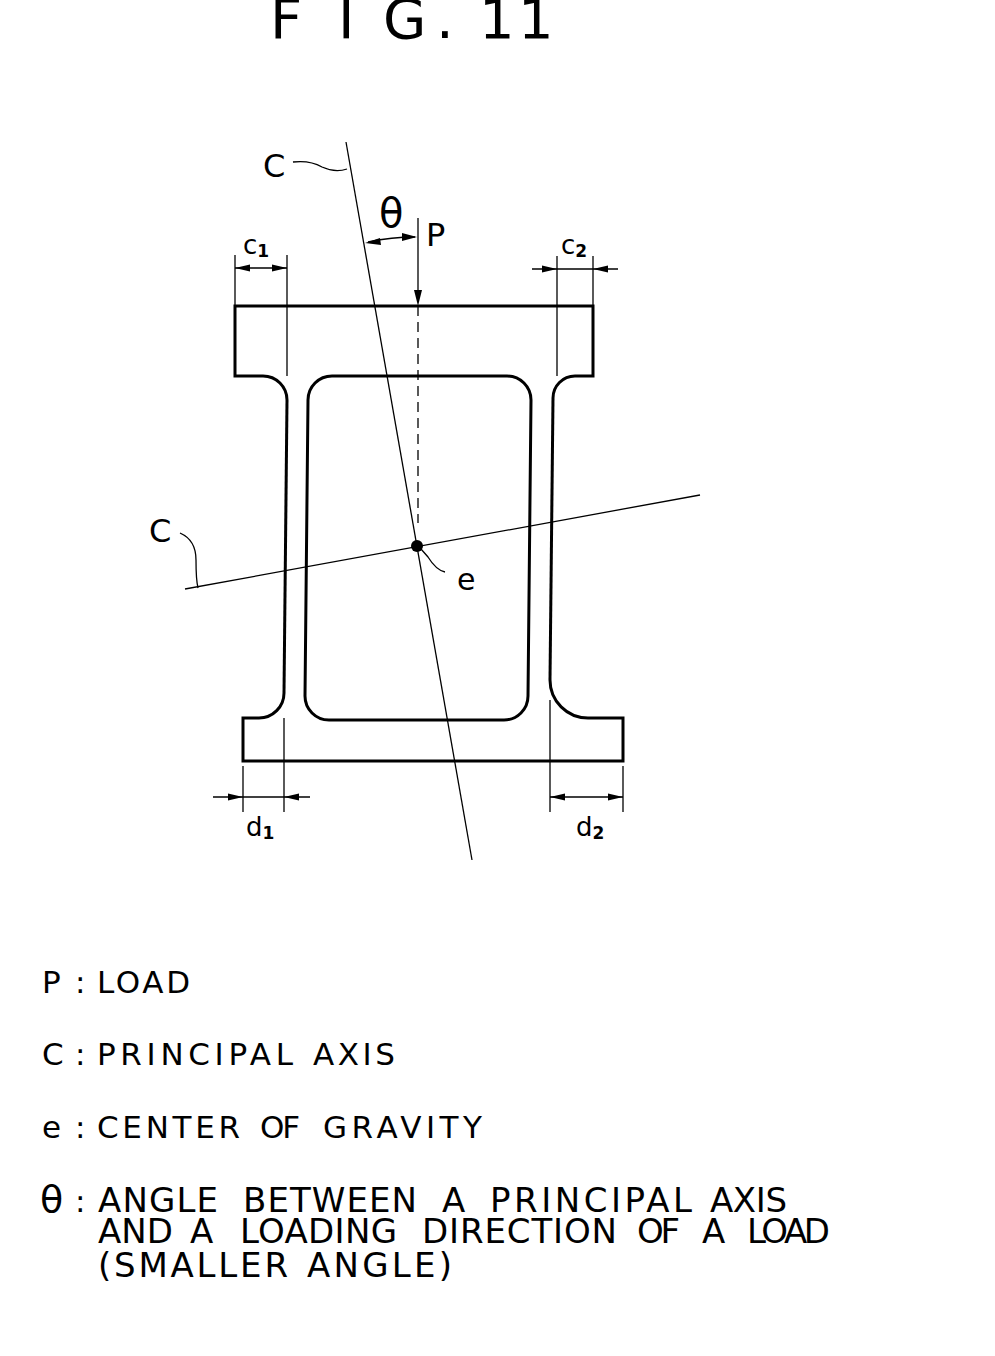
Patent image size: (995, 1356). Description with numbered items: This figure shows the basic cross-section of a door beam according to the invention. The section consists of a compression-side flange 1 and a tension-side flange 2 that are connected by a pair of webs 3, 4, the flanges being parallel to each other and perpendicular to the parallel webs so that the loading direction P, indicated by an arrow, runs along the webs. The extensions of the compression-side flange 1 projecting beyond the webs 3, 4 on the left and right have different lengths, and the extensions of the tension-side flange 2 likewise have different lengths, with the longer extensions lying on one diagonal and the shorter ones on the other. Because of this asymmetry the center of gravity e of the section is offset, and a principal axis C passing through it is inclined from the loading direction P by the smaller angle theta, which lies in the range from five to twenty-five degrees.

The compression-side flange 1 is at (492, 316).
The tension-side flange 2 is at (507, 750).
The web 3 is at (287, 455).
The web 4 is at (552, 452).